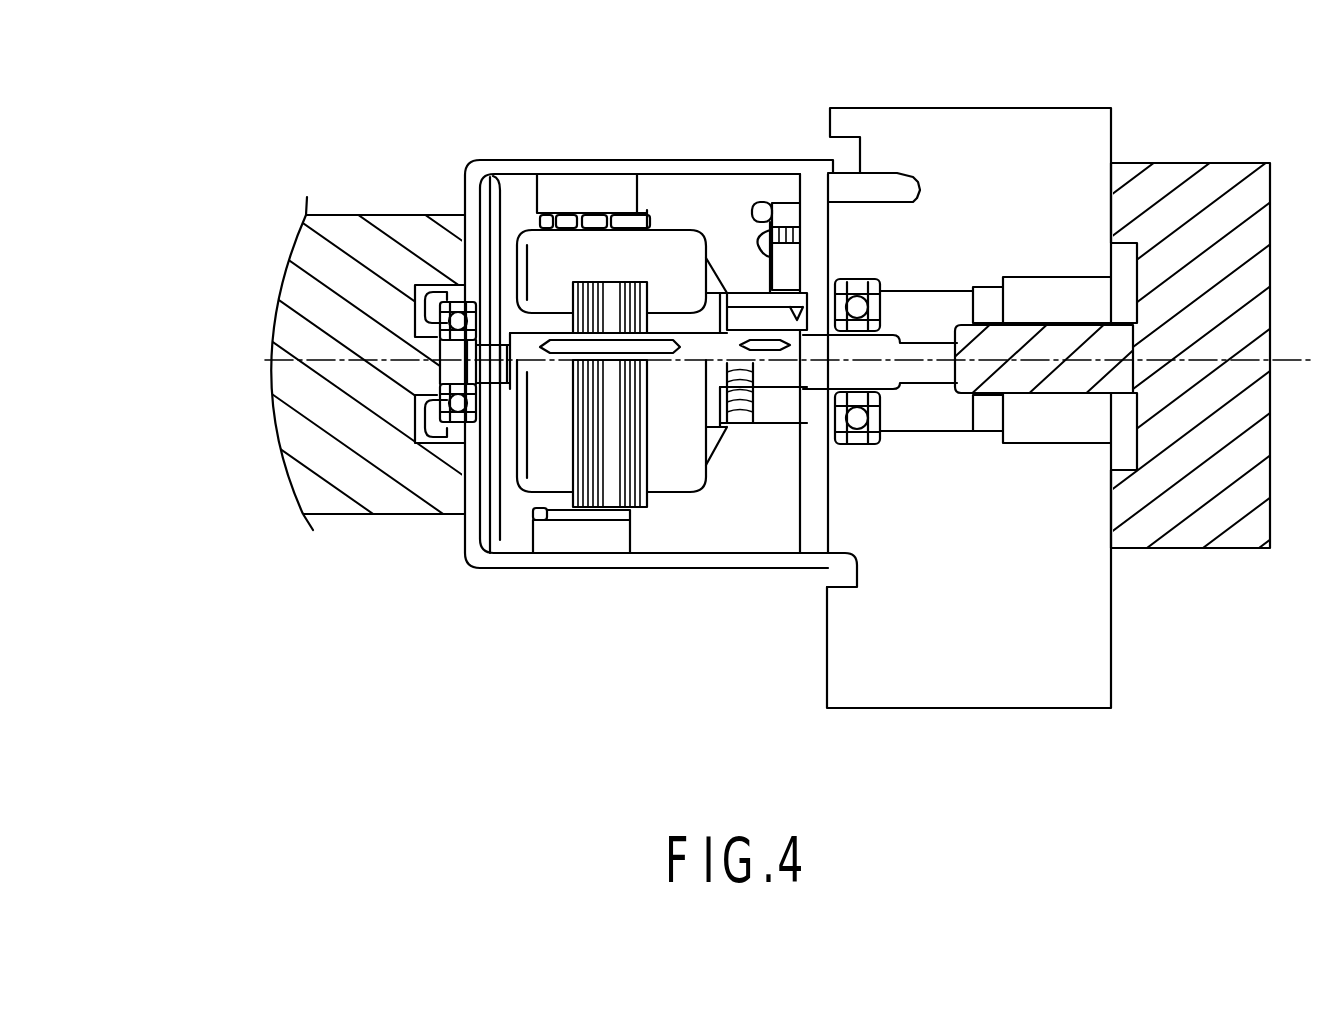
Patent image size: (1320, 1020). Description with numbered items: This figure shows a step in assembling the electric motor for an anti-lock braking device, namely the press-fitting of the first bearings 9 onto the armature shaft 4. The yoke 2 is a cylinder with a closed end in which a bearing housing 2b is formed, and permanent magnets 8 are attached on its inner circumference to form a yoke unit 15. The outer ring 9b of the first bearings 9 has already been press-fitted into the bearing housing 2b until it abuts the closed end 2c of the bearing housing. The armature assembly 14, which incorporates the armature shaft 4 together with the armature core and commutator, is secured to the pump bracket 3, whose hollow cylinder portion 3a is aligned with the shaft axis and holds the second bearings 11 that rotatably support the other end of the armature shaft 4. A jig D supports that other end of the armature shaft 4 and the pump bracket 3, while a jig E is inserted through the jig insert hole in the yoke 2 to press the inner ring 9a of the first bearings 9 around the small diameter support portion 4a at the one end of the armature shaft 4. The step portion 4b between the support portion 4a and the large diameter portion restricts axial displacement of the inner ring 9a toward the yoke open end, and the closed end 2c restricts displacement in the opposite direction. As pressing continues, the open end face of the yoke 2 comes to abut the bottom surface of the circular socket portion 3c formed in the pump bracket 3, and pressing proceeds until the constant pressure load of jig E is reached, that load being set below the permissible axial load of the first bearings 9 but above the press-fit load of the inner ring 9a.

The jig E is at (370, 228).
The yoke 2 is at (753, 163).
The bearing housing 2b is at (445, 436).
The closed end of the bearing housing 2c is at (410, 320).
The pump bracket 3 is at (1078, 145).
The hollow cylinder portion 3a is at (937, 420).
The circular socket portion 3c is at (847, 570).
The armature shaft 4 is at (808, 342).
The small diameter support portion 4a is at (485, 392).
The step portion 4b is at (503, 392).
The permanent magnets 8 is at (590, 520).
The first bearings 9 is at (445, 287).
The inner ring of the first bearings 9a is at (442, 362).
The outer ring of the first bearings 9b is at (490, 290).
The second bearings 11 is at (887, 268).
The armature assembly 14 is at (669, 510).
The yoke unit 15 is at (678, 150).
The jig D is at (1222, 212).